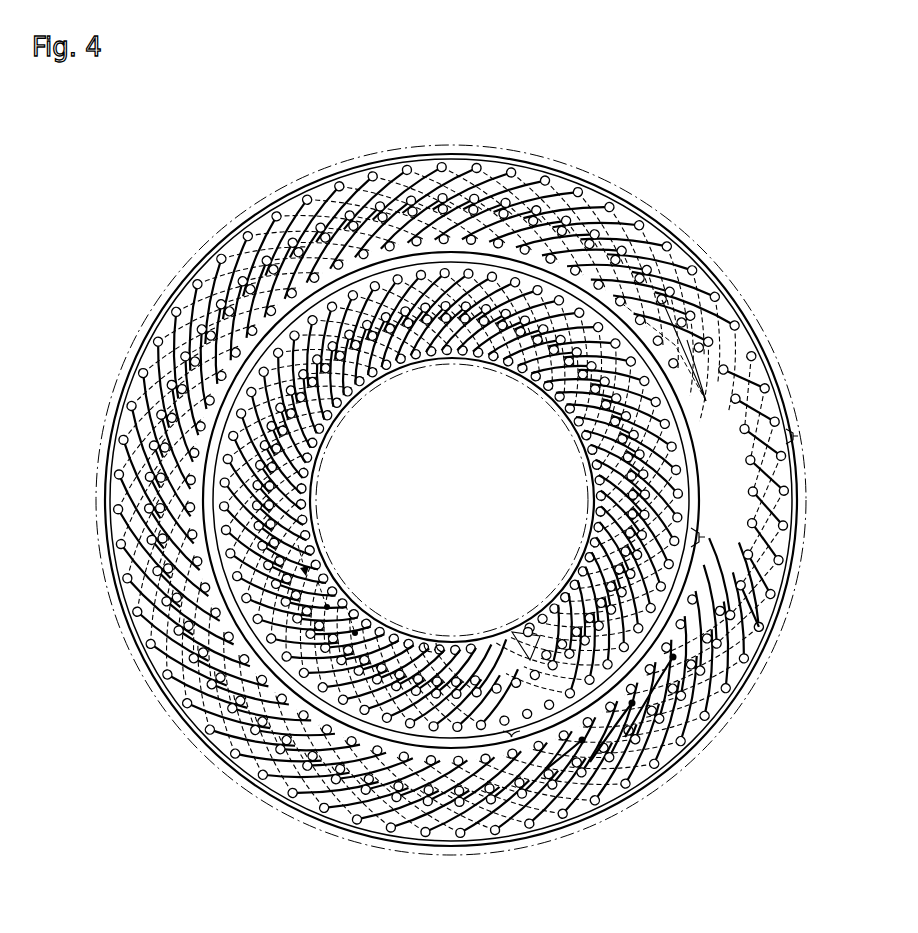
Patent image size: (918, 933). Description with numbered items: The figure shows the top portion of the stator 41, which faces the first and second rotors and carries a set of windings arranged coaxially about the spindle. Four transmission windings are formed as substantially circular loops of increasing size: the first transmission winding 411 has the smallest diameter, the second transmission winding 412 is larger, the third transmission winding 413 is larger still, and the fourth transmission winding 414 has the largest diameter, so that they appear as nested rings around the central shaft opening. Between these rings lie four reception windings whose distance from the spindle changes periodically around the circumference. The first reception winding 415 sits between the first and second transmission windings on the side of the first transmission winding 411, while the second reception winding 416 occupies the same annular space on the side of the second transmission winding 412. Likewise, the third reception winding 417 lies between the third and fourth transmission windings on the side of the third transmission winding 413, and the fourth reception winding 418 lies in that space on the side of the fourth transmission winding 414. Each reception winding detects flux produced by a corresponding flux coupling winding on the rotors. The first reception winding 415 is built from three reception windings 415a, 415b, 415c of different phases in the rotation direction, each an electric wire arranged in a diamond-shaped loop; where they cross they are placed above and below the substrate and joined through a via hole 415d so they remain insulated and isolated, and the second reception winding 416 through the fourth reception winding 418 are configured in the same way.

The stator 41 is at (437, 147).
The first transmission winding 411 is at (480, 633).
The second transmission winding 412 is at (447, 737).
The third transmission winding 413 is at (432, 750).
The fourth transmission winding 414 is at (452, 848).
The first reception winding 415 is at (590, 780).
The reception winding 415a is at (582, 744).
The reception winding 415b is at (632, 707).
The reception winding 415c is at (673, 661).
The via hole 415d is at (528, 637).
The second reception winding 416 is at (408, 683).
The third reception winding 417 is at (373, 748).
The fourth reception winding 418 is at (323, 800).